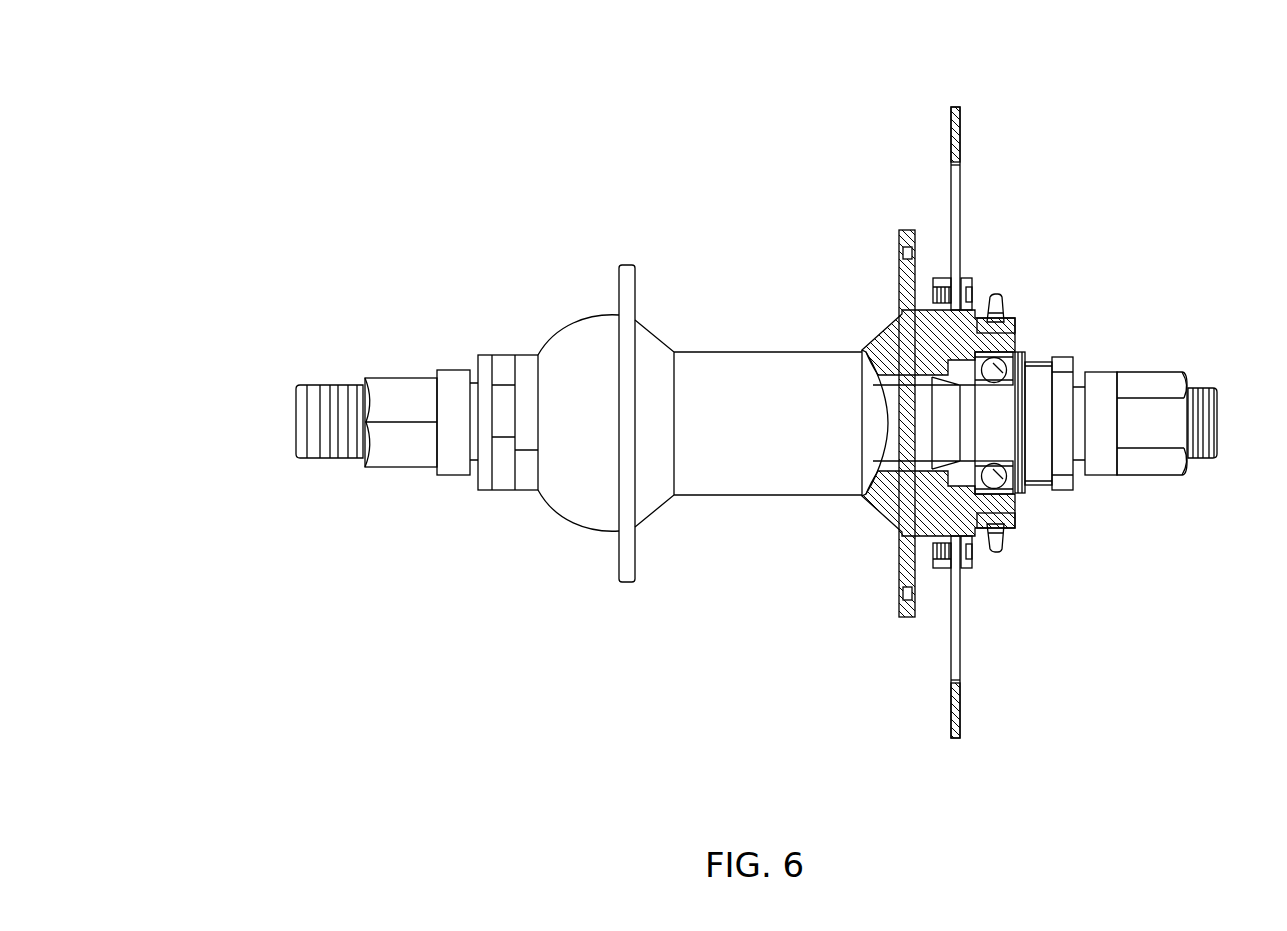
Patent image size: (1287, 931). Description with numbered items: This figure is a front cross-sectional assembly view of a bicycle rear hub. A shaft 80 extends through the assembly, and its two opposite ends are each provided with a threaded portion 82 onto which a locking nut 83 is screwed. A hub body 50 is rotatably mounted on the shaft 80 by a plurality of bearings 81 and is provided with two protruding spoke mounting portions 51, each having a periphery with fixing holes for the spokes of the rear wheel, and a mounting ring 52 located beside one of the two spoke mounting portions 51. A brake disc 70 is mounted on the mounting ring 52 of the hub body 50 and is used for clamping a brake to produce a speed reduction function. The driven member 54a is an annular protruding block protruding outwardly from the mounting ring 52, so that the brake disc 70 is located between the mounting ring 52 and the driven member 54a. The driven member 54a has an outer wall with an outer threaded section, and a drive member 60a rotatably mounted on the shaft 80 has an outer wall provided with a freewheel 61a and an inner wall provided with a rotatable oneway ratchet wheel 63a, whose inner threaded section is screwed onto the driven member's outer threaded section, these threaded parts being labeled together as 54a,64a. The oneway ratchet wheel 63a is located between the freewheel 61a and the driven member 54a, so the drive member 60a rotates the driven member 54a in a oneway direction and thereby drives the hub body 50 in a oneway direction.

The hub body 50 is at (710, 340).
The spoke mounting portions 51 is at (618, 290).
The mounting ring 52 is at (952, 277).
The brake disc 70 is at (974, 142).
The shaft 80 is at (330, 472).
The threaded portion 82 is at (298, 422).
The locking nut 83 is at (411, 388).
The bearings 81 is at (1017, 353).
The freewheel 61a is at (998, 297).
The oneway ratchet wheel 63a is at (1013, 327).
The driven member 54a is at (988, 530).
The driven member and inner threaded section 54a,64a is at (1022, 500).
The drive member 60a is at (1016, 544).